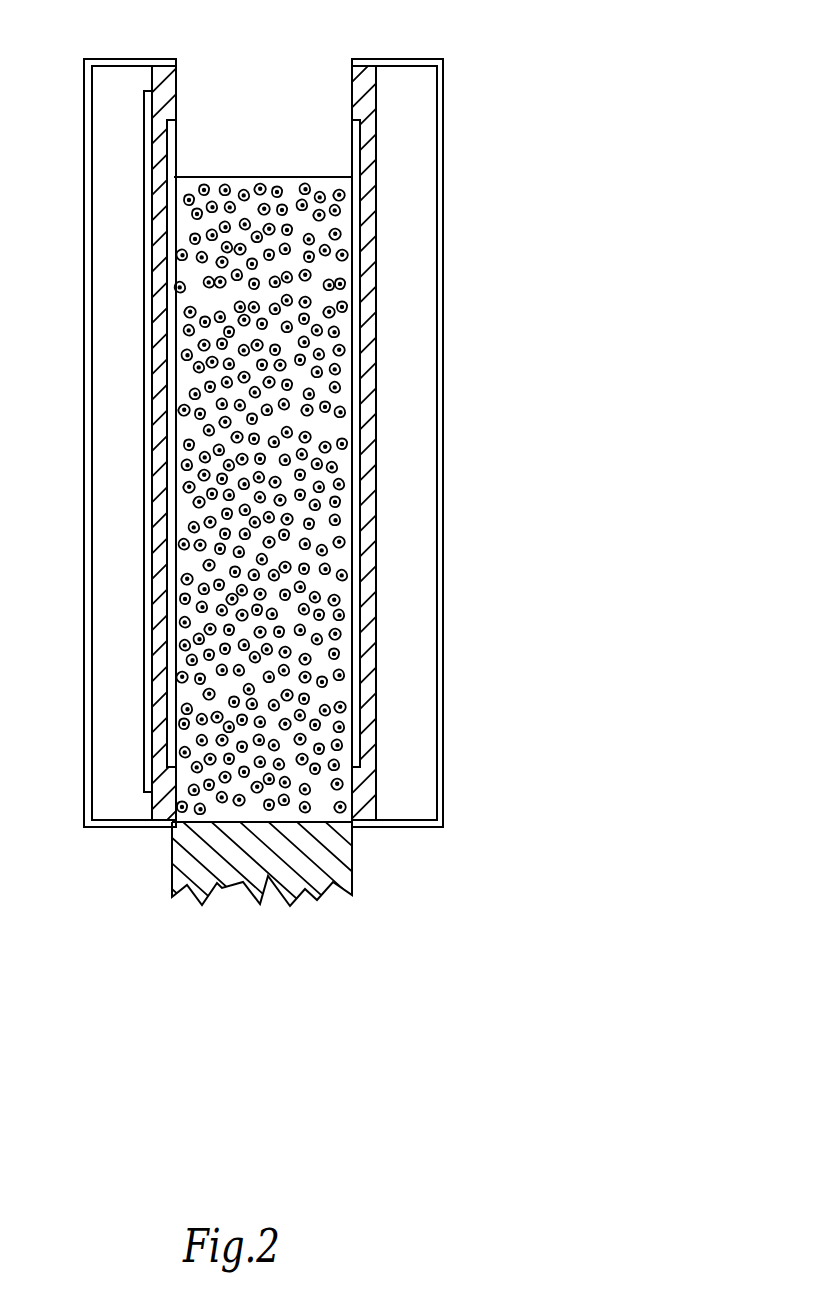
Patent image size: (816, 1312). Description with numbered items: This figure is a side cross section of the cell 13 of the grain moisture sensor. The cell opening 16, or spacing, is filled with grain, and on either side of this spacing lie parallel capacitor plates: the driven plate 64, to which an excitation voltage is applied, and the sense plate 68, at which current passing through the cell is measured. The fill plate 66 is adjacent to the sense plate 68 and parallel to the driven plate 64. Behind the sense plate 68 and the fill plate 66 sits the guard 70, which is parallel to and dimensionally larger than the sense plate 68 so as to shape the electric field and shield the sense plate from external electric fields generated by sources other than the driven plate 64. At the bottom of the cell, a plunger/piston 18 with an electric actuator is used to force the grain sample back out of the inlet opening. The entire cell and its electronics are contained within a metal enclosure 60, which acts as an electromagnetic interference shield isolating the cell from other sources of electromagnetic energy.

The cell 13 is at (558, 58).
The cell opening 16 is at (262, 92).
The plunger/piston 18 is at (352, 857).
The metal enclosure 60 is at (114, 58).
The driven plate 64 is at (357, 147).
The fill plate 66 is at (171, 146).
The sense plate 68 is at (173, 300).
The guard 70 is at (143, 383).